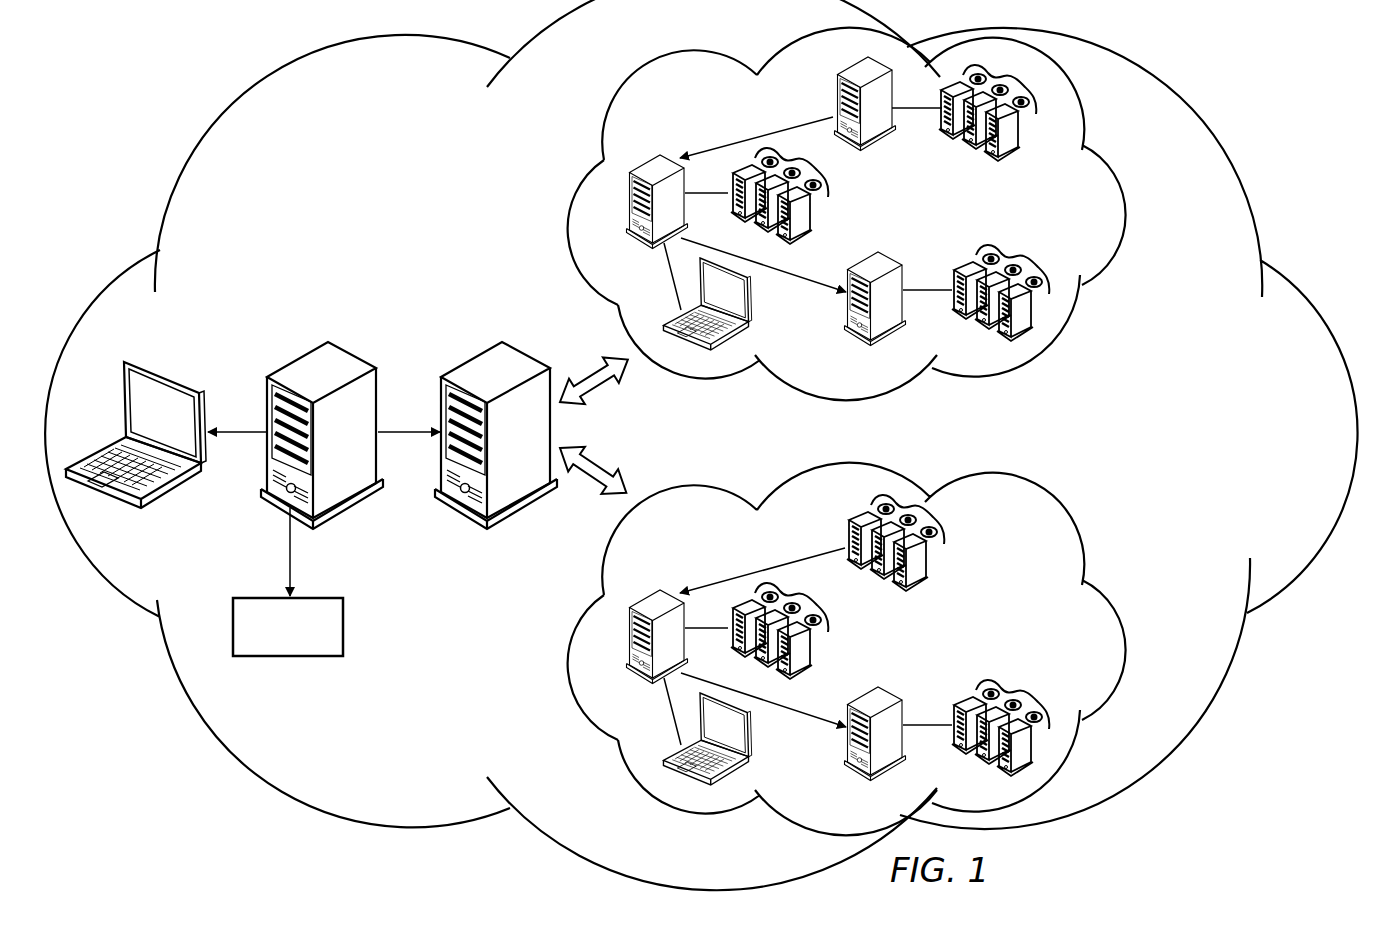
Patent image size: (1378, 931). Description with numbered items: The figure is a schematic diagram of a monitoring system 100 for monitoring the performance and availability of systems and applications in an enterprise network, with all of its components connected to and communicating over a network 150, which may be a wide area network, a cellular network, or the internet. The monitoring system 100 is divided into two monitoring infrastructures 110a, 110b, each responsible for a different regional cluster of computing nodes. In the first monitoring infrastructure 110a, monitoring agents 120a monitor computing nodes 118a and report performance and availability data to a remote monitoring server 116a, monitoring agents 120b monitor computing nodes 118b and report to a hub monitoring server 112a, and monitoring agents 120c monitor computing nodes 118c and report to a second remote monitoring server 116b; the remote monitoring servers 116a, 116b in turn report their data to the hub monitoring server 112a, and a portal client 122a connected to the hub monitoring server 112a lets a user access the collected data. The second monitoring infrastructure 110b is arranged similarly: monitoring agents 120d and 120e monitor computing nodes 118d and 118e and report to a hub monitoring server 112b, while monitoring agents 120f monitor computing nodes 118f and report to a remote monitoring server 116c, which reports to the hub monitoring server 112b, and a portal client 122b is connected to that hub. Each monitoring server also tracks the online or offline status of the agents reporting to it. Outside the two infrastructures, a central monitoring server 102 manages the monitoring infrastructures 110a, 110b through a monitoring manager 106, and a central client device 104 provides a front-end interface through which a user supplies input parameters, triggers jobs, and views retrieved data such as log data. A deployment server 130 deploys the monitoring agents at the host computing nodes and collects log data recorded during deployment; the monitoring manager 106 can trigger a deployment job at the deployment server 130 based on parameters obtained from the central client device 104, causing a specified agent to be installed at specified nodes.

The monitoring system 100 is at (222, 70).
The central monitoring server 102 is at (292, 350).
The central client device 104 is at (168, 498).
The monitoring manager 106 is at (347, 628).
The deployment server 130 is at (462, 350).
The network 150 is at (1178, 74).
The monitoring infrastructure 110a is at (1120, 212).
The monitoring infrastructure 110b is at (1120, 644).
The hub monitoring server 112a is at (660, 154).
The hub monitoring server 112b is at (660, 589).
The remote monitoring server 116a is at (833, 72).
The remote monitoring server 116b is at (894, 324).
The remote monitoring server 116c is at (894, 759).
The computing nodes 118a is at (962, 150).
The computing nodes 118b is at (828, 208).
The computing nodes 118c is at (958, 264).
The computing nodes 118d is at (934, 592).
The computing nodes 118e is at (828, 644).
The computing nodes 118f is at (958, 699).
The monitoring agents 120a is at (1025, 76).
The monitoring agents 120b is at (820, 152).
The monitoring agents 120c is at (1045, 242).
The monitoring agents 120d is at (937, 498).
The monitoring agents 120e is at (820, 587).
The monitoring agents 120f is at (1045, 677).
The portal client 122a is at (750, 304).
The portal client 122b is at (750, 739).